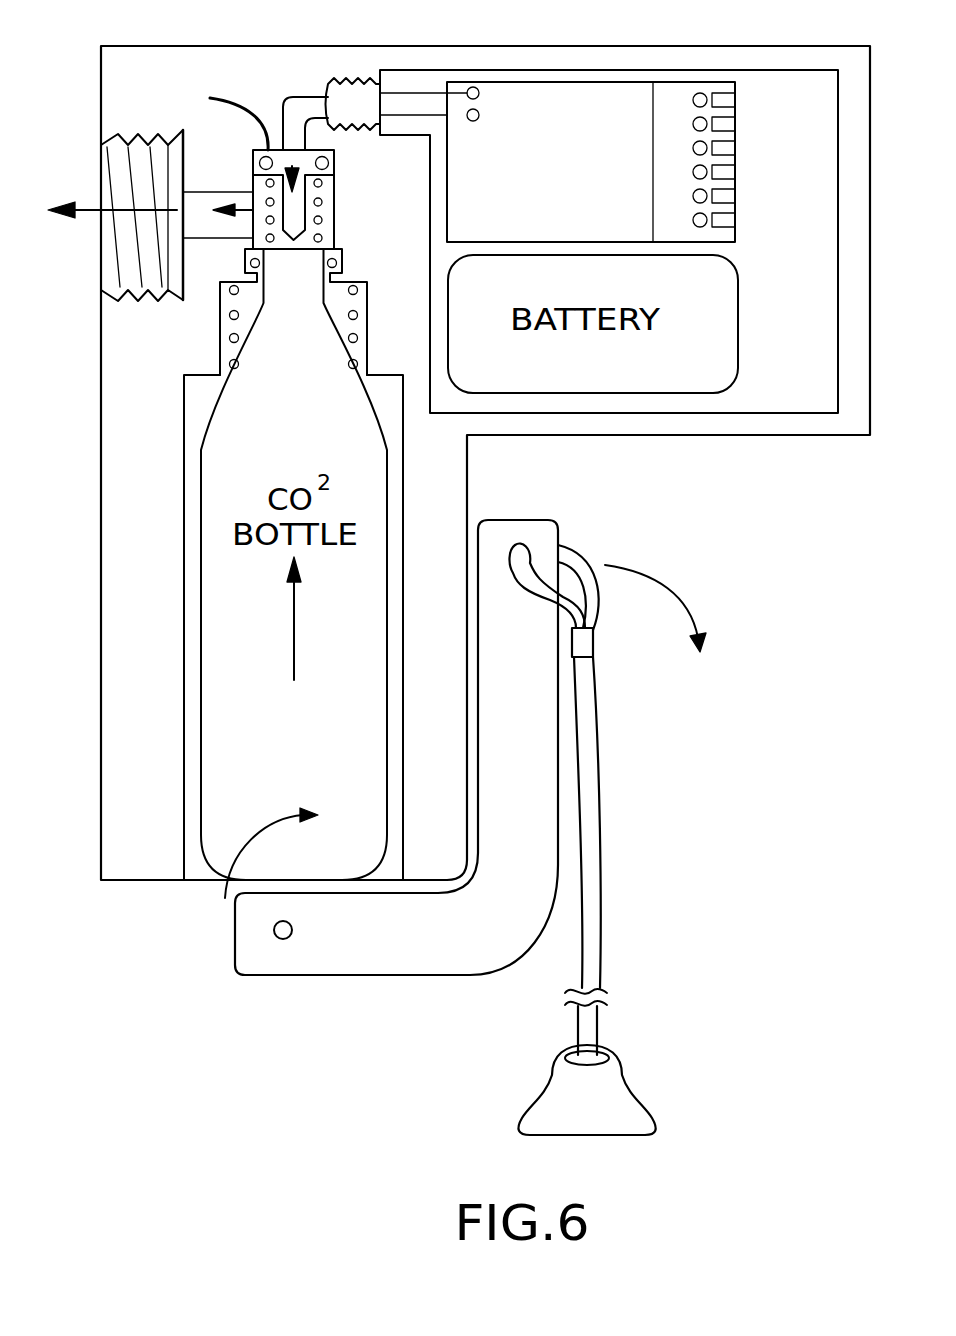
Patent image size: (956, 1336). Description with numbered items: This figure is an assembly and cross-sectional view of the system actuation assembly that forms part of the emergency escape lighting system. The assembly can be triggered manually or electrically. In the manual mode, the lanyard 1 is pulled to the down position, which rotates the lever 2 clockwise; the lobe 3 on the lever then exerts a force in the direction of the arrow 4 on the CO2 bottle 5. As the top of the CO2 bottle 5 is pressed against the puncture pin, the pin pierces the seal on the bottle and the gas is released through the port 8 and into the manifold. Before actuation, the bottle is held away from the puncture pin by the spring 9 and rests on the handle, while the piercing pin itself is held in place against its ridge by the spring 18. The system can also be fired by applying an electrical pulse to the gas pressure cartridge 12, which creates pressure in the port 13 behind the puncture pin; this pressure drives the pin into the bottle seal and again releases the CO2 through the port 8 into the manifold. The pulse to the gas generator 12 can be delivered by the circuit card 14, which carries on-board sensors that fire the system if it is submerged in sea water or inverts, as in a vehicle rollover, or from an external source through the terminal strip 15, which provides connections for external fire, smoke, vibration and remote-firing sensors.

The lanyard 1 is at (602, 817).
The lever 2 is at (430, 933).
The lobe 3 is at (233, 943).
The arrow 4 is at (293, 638).
The CO2 bottle 5 is at (293, 250).
The port 8 is at (203, 202).
The spring 9 is at (231, 338).
The gas pressure cartridge 12 is at (363, 107).
The port 13 is at (296, 108).
The circuit card 14 is at (572, 103).
The terminal strip 15 is at (737, 137).
The spring 18 is at (292, 170).